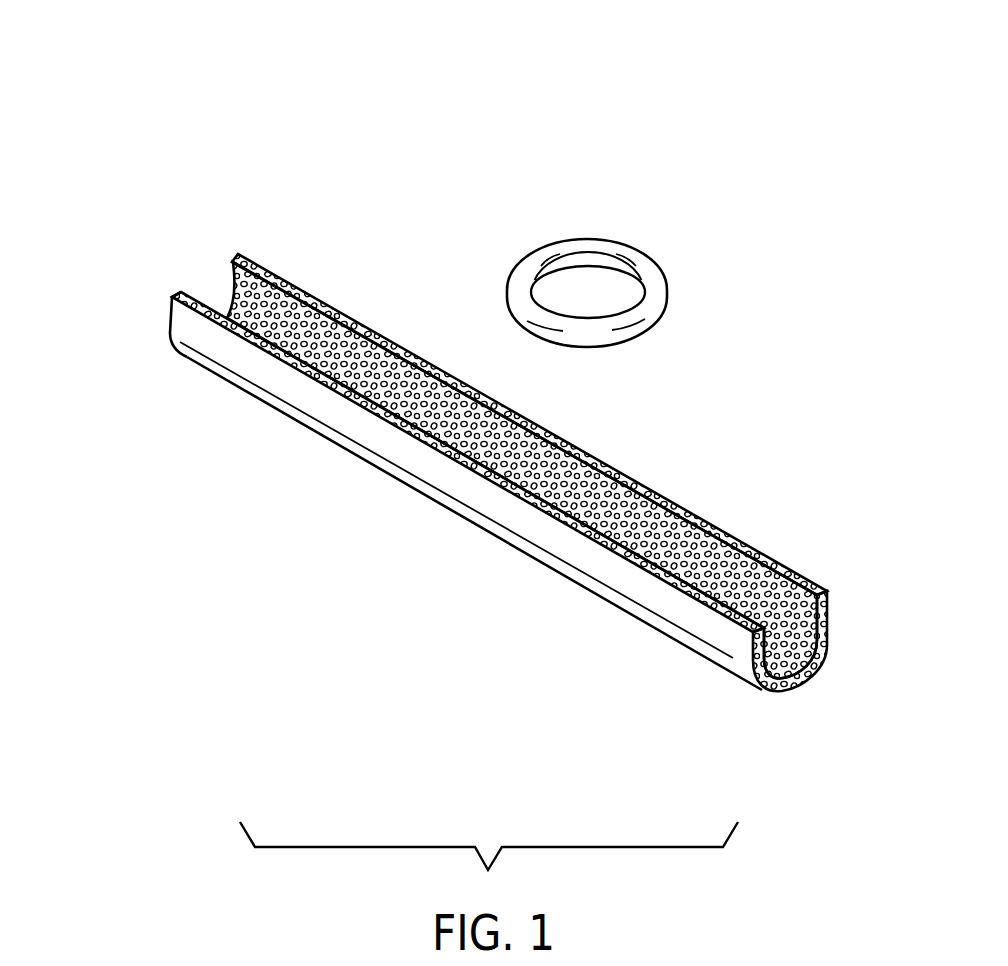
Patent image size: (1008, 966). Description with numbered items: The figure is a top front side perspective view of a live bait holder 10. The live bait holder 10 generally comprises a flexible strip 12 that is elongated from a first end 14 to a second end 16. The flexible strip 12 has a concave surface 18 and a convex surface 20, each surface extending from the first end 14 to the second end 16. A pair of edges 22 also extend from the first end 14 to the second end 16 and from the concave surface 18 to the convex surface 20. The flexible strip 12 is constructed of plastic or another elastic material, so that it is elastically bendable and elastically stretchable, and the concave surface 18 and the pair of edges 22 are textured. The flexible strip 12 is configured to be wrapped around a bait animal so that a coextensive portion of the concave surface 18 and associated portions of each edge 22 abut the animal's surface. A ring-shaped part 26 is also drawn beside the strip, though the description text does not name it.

The live bait holder 10 is at (462, 387).
The flexible strip 12 is at (462, 513).
The first end 14 is at (168, 312).
The second end 16 is at (785, 690).
The concave surface 18 is at (765, 590).
The convex surface 20 is at (453, 478).
The pair of edges 22 is at (618, 562).
The ring 26 is at (664, 250).